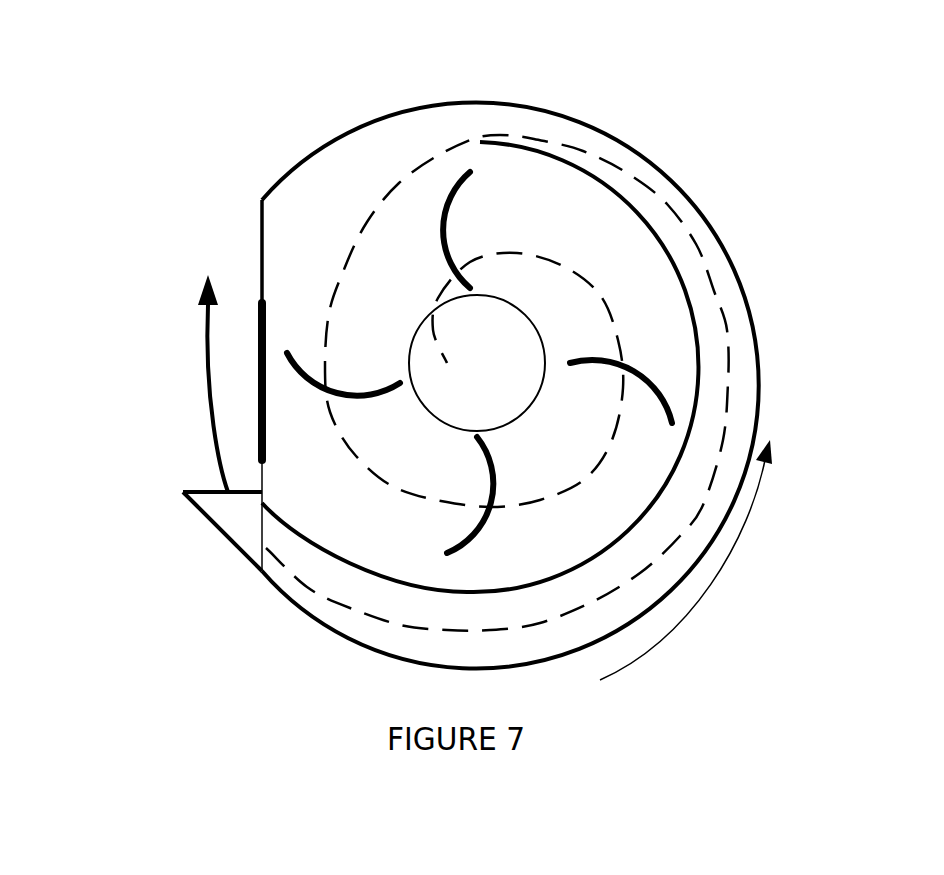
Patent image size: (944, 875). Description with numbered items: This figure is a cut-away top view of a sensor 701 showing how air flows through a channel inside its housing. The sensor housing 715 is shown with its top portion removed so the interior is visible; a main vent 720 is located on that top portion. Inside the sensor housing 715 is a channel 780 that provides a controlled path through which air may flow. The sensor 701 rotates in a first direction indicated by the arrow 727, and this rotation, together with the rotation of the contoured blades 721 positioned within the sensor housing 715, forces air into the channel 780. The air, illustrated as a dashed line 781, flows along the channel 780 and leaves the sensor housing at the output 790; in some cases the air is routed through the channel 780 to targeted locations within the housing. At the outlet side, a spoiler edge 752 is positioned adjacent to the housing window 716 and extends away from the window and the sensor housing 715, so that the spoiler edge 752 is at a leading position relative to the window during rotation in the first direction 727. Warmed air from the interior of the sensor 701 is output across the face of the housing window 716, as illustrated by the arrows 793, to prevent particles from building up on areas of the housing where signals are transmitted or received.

The sensor 701 is at (215, 202).
The sensor housing 715 is at (490, 100).
The housing window 716 is at (258, 348).
The main vent 720 is at (414, 328).
The contoured blades 721 is at (442, 220).
The first direction 727 is at (737, 553).
The spoiler edge 752 is at (223, 533).
The channel 780 is at (740, 365).
The air 781 is at (708, 282).
The output 790 is at (183, 490).
The arrows 793 is at (205, 367).